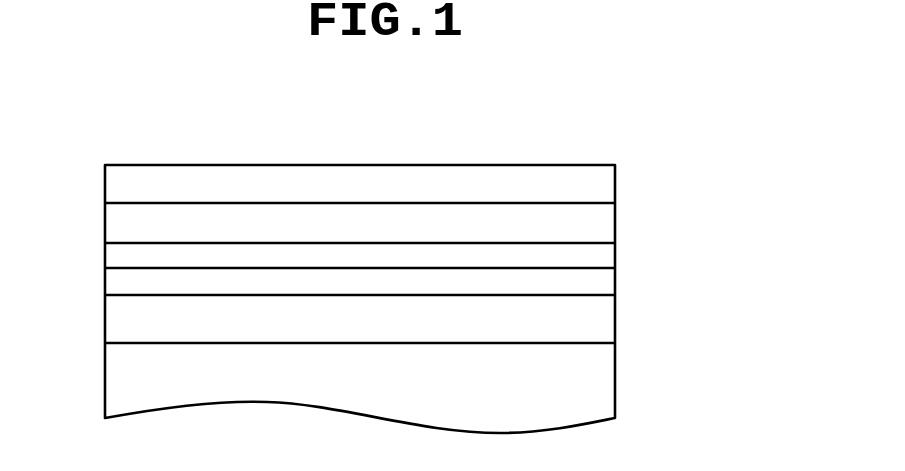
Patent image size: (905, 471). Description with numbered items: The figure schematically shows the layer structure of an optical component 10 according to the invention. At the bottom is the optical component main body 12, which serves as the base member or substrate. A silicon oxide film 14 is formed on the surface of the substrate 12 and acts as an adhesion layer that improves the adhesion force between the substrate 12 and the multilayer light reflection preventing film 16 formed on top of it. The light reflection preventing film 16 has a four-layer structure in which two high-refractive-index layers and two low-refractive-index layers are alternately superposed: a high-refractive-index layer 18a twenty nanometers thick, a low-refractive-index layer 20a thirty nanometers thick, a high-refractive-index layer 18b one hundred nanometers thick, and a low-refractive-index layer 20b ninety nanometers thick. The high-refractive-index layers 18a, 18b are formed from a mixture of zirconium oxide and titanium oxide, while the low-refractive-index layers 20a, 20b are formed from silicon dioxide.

The optical component 10 is at (592, 142).
The optical component main body 12 is at (602, 378).
The silicon oxide film 14 is at (602, 322).
The multilayer light reflection preventing film 16 is at (690, 240).
The high-refractive-index layer 18a is at (602, 282).
The high-refractive-index layer 18b is at (602, 215).
The low-refractive-index layer 20a is at (602, 255).
The low-refractive-index layer 20b is at (602, 177).